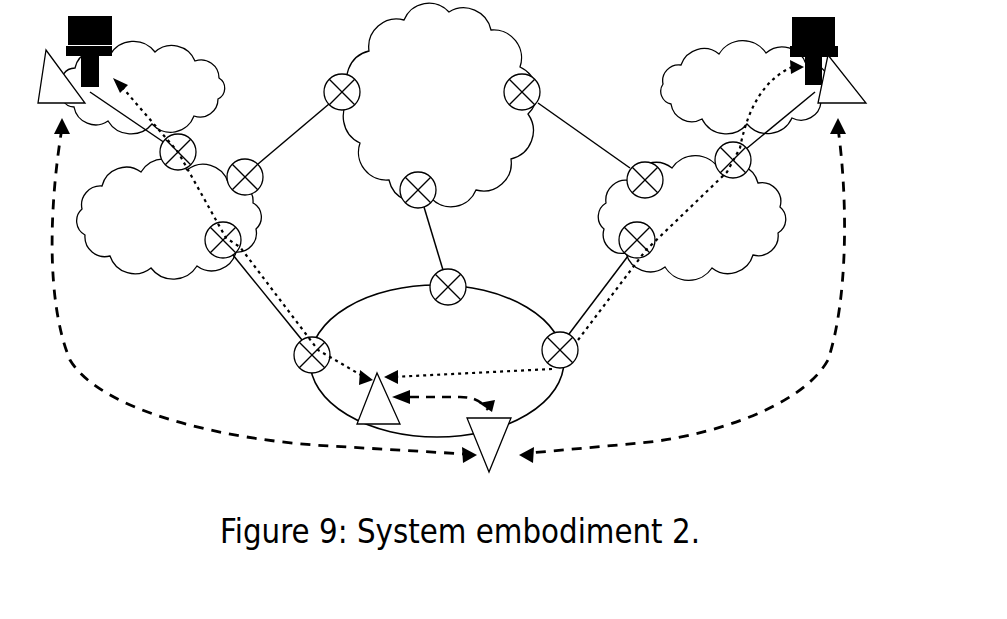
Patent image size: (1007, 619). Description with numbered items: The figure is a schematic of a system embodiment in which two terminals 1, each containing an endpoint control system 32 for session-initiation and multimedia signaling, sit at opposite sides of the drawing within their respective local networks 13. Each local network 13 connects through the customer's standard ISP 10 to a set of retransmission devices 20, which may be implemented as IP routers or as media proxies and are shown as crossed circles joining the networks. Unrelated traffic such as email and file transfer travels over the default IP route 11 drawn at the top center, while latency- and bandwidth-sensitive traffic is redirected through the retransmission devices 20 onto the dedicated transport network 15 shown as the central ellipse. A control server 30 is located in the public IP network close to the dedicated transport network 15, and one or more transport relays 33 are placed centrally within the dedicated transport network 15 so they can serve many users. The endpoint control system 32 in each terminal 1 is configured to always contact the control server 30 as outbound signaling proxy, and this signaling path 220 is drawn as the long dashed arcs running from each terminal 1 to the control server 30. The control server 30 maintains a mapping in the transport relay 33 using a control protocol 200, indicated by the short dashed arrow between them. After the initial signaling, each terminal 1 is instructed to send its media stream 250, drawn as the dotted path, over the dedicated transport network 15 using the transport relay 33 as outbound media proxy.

The terminal 1 is at (444, 50).
The standard ISP used by the customer 10 is at (431, 218).
The default IP route 11 is at (439, 105).
The local network 13 is at (445, 87).
The dedicated transport network 15 is at (437, 361).
The retransmission device 20 is at (452, 225).
The control server 30 is at (489, 445).
The SIP/H.323 endpoint control system 32 is at (452, 76).
The transport relay 33 is at (378, 398).
The control protocol 200 is at (443, 407).
The signaling path 220 is at (449, 290).
The media stream 250 is at (288, 297).